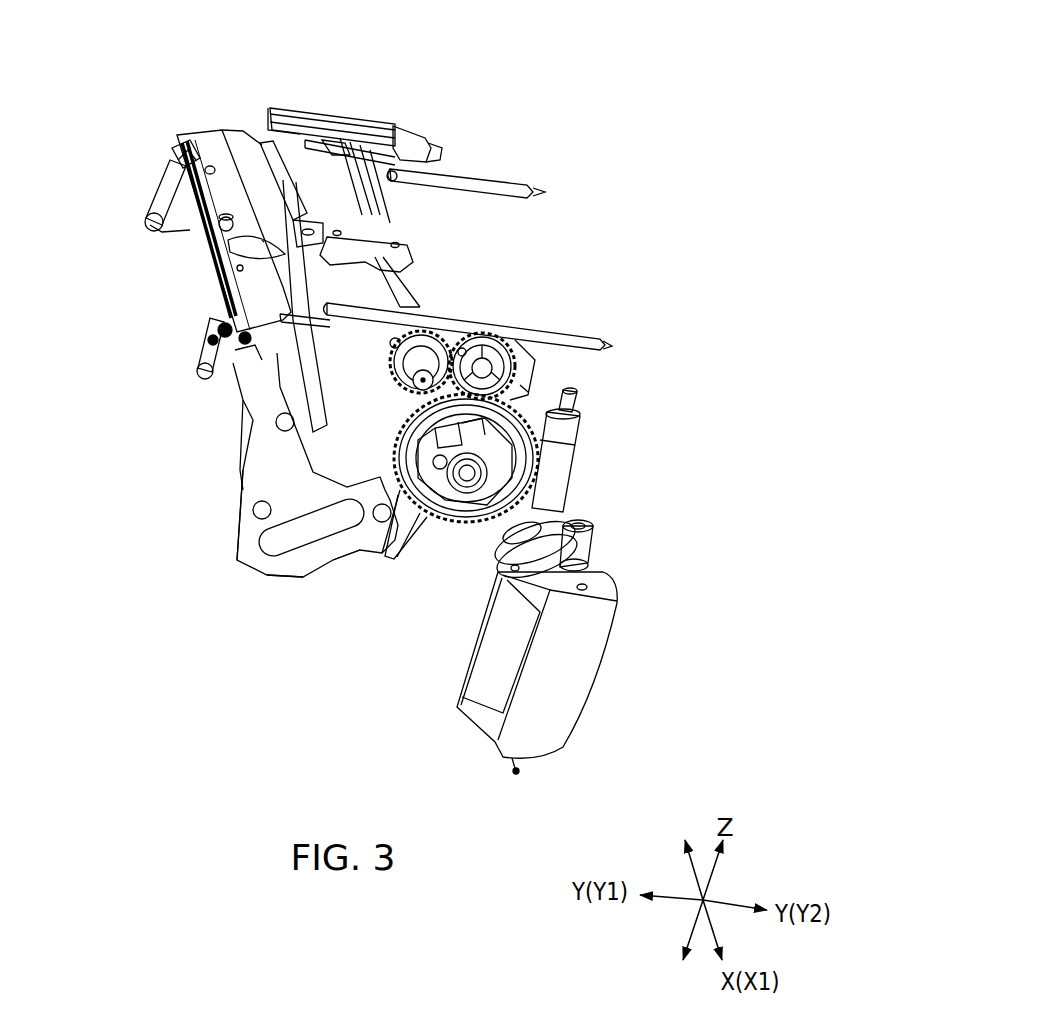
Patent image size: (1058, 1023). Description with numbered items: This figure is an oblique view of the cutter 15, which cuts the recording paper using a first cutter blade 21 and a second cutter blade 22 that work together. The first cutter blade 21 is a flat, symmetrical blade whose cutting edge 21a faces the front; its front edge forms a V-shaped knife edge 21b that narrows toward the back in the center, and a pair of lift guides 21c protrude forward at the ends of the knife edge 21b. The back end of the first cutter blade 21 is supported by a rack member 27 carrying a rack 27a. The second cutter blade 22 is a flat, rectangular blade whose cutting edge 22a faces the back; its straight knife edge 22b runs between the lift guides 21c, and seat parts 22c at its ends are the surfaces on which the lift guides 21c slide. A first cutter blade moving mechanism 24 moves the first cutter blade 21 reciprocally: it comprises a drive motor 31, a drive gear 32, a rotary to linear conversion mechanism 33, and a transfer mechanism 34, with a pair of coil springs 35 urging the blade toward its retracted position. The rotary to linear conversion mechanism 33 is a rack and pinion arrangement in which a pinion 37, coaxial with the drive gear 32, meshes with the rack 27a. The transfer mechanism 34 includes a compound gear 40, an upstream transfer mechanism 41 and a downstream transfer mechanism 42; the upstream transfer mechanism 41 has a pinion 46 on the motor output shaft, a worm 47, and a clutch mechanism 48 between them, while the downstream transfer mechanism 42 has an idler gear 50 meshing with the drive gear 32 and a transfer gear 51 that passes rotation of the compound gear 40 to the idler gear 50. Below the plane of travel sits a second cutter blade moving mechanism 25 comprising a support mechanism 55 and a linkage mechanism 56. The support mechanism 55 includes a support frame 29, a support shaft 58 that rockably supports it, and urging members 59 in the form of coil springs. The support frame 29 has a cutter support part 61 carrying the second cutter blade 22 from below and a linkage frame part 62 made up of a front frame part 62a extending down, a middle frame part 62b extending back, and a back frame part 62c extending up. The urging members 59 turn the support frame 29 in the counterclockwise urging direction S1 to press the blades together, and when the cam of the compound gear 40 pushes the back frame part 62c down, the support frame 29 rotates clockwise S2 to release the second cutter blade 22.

The cutter 15 is at (600, 84).
The first cutter blade 21 is at (330, 197).
The cutting edge 21a is at (267, 157).
The knife edge 21b is at (287, 140).
The lift guides 21c is at (230, 122).
The second cutter blade 22 is at (203, 145).
The cutting edge 22a is at (280, 263).
The knife edge 22b is at (268, 231).
The seat parts 22c is at (222, 190).
The first cutter blade moving mechanism 24 is at (528, 370).
The second cutter blade moving mechanism 25 is at (227, 465).
The rack member 27 is at (408, 138).
The rack 27a is at (422, 163).
The support frame 29 is at (270, 450).
The drive motor 31 is at (567, 683).
The drive gear 32 is at (477, 350).
The rotary to linear conversion mechanism 33 is at (433, 270).
The transfer mechanism 34 is at (577, 383).
The coil spring 35 is at (483, 180).
The pinion 37 is at (395, 182).
The compound gear 40 is at (463, 503).
The upstream transfer mechanism 41 is at (600, 505).
The downstream transfer mechanism 42 is at (505, 327).
The pinion 46 is at (590, 560).
The worm 47 is at (577, 443).
The clutch mechanism 48 is at (582, 538).
The idler gear 50 is at (490, 353).
The transfer gear 51 is at (535, 387).
The support mechanism 55 is at (180, 367).
The linkage mechanism 56 is at (423, 537).
The support shaft 58 is at (245, 368).
The urging members 59 is at (158, 187).
The cutter support part 61 is at (190, 230).
The linkage frame part 62 is at (340, 625).
The front frame part 62a is at (250, 465).
The middle frame part 62b is at (313, 553).
The back frame part 62c is at (370, 547).
The counterclockwise urging direction S1 is at (272, 347).
The clockwise direction S2 is at (283, 360).